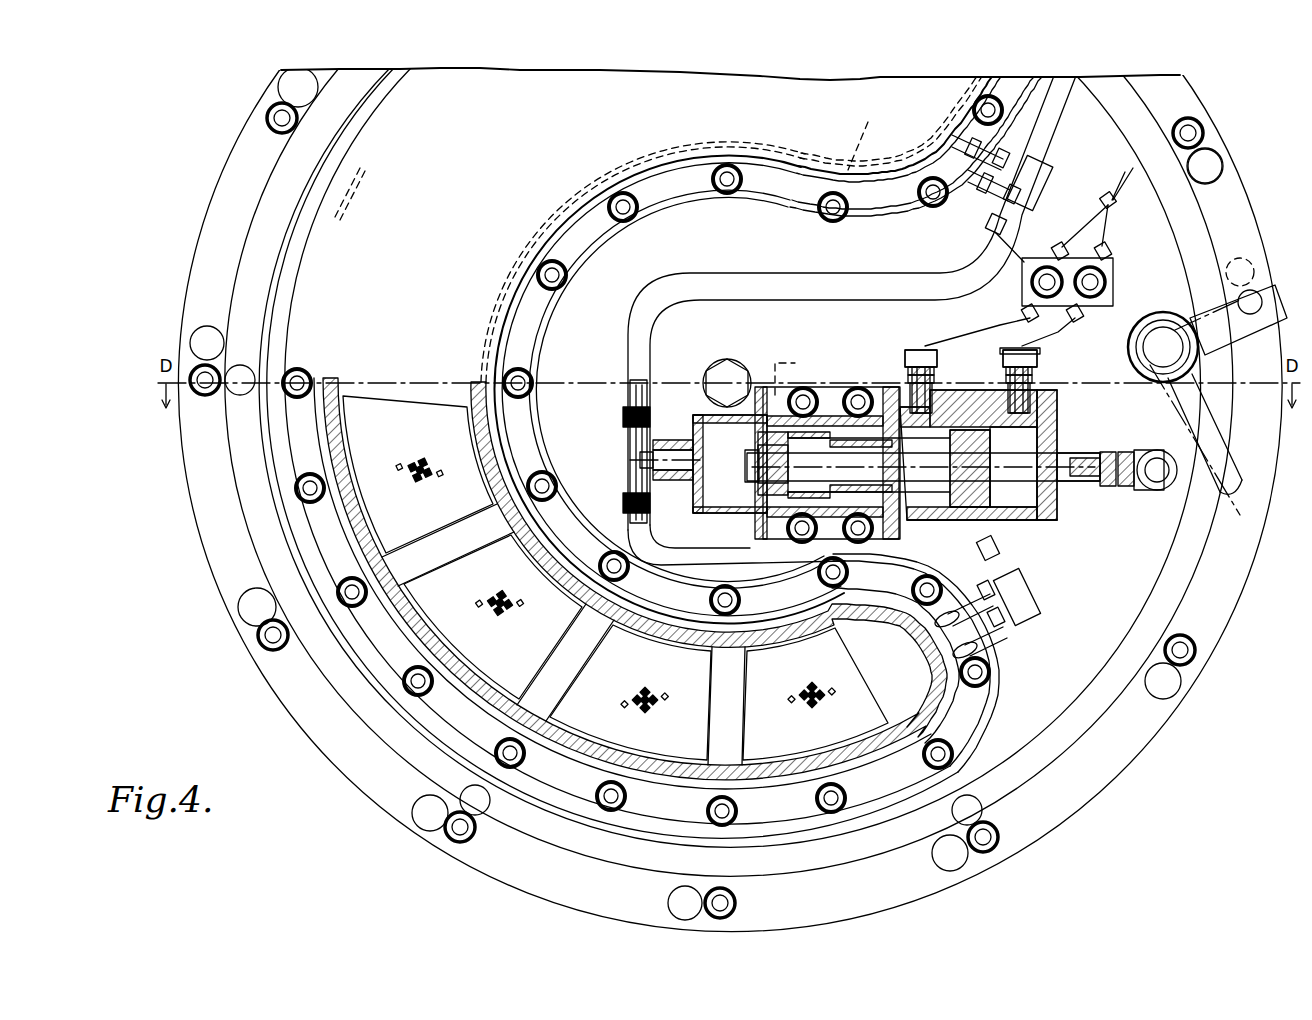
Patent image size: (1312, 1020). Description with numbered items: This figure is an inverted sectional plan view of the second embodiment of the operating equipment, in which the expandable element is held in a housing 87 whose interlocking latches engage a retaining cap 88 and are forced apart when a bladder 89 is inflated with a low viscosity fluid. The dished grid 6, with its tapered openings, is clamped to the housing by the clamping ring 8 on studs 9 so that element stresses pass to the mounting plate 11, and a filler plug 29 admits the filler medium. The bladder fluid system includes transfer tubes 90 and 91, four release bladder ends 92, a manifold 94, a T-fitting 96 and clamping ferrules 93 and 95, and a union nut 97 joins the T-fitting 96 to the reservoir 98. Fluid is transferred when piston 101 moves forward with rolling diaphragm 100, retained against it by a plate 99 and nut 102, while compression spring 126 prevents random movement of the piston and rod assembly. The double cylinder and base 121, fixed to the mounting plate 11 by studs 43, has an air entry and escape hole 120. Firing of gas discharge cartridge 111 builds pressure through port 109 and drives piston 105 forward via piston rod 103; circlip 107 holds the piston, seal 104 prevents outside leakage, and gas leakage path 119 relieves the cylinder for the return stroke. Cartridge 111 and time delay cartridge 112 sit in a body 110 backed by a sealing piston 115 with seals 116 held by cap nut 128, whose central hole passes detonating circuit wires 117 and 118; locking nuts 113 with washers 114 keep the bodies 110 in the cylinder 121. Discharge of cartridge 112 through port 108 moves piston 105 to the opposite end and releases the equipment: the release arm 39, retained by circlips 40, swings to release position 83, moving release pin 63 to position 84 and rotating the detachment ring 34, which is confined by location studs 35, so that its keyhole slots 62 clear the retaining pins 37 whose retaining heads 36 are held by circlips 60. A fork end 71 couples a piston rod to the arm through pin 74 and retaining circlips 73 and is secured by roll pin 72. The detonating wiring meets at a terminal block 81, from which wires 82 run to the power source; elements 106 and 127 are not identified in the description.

The grid 6 is at (420, 458).
The clamping ring 8 is at (970, 725).
The studs 9 is at (972, 684).
The mounting plate 11 is at (476, 518).
The filler plug 29 is at (724, 365).
The detachment ring 34 is at (1221, 162).
The location studs 35 is at (240, 368).
The retaining heads 36 is at (264, 668).
The retaining pins 37 is at (1194, 130).
The release arm 39 is at (1195, 310).
The circlips 40 is at (1140, 333).
The studs 43 is at (801, 392).
The circlips 60 is at (1183, 122).
The keyhole slots 62 is at (1208, 178).
The release pin 63 is at (1262, 301).
The fork end 71 is at (1110, 450).
The roll pin 72 is at (1128, 487).
The retaining circlips 73 is at (1160, 491).
The pin 74 is at (1155, 458).
The terminal block 81 is at (1045, 262).
The wires 82 is at (1105, 198).
The release position 83 is at (1222, 473).
The release pin position 84 is at (1241, 262).
The housing 87 is at (337, 420).
The retaining cap 88 is at (562, 202).
The bladder 89 is at (342, 208).
The transfer tube 90 is at (708, 282).
The transfer tube 91 is at (697, 566).
The release bladder ends 92 is at (992, 150).
The clamping ferrules 93 is at (1008, 158).
The manifold 94 is at (1032, 172).
The clamping ferrules 95 is at (624, 410).
The T-fitting 96 is at (628, 441).
The union nut 97 is at (668, 440).
The reservoir 98 is at (692, 487).
The plate 99 is at (758, 436).
The rolling diaphragm 100 is at (768, 527).
The piston 101 is at (758, 488).
The nut 102 is at (746, 462).
The piston rod 103 is at (1067, 480).
The seal 104 is at (1050, 452).
The piston 105 is at (985, 500).
The cylinder bottom wall 106 is at (985, 522).
The circlip 107 is at (985, 485).
The port 108 is at (912, 420).
The port 109 is at (1013, 466).
The body 110 is at (945, 398).
The gas discharge cartridge 111 is at (1006, 370).
The time delay gas discharge cartridge 112 is at (908, 371).
The locking nuts 113 is at (908, 381).
The washers 114 is at (934, 392).
The sealing piston 115 is at (910, 350).
The seals 116 is at (905, 360).
The detonating circuit wires 117 is at (918, 345).
The detonating circuit wires 118 is at (1058, 325).
The gas leakage path 119 is at (1085, 458).
The air entry and escape hole 120 is at (864, 420).
The double cylinder and base 121 is at (826, 392).
The compression spring 126 is at (893, 440).
The sleeve 127 is at (893, 490).
The cap nut 128 is at (1000, 352).